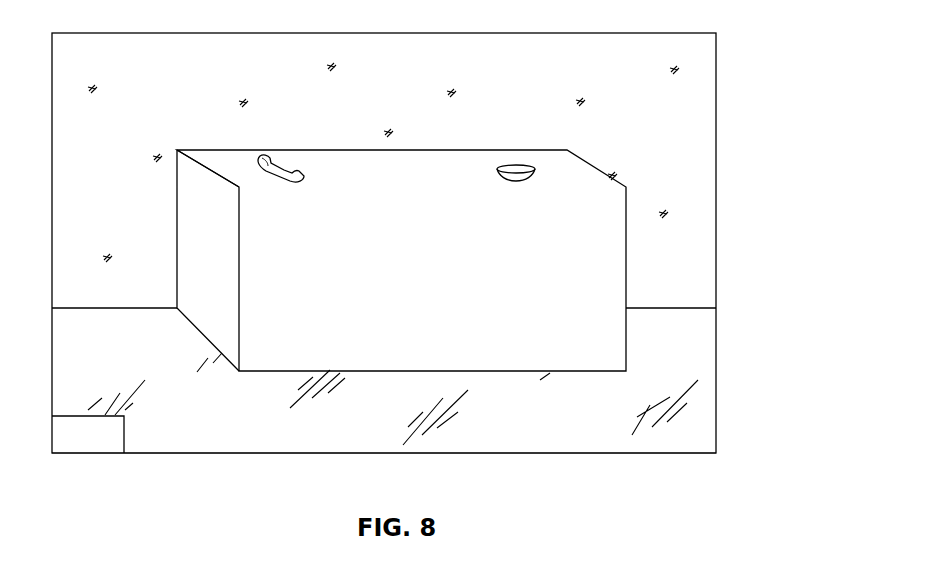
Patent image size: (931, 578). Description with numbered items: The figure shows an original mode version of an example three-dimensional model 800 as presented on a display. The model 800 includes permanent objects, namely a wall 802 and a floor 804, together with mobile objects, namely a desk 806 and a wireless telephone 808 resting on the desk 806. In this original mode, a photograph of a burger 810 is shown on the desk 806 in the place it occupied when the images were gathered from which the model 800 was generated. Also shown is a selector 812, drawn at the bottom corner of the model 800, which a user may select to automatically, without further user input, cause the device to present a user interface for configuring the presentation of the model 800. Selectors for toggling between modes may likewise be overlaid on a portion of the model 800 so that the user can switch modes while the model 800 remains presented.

The 3D model 800 is at (727, 65).
The wall 802 is at (384, 298).
The floor 804 is at (384, 403).
The desk 806 is at (401, 260).
The wireless telephone 808 is at (306, 177).
The burger 810 is at (497, 170).
The selector 812 is at (62, 455).